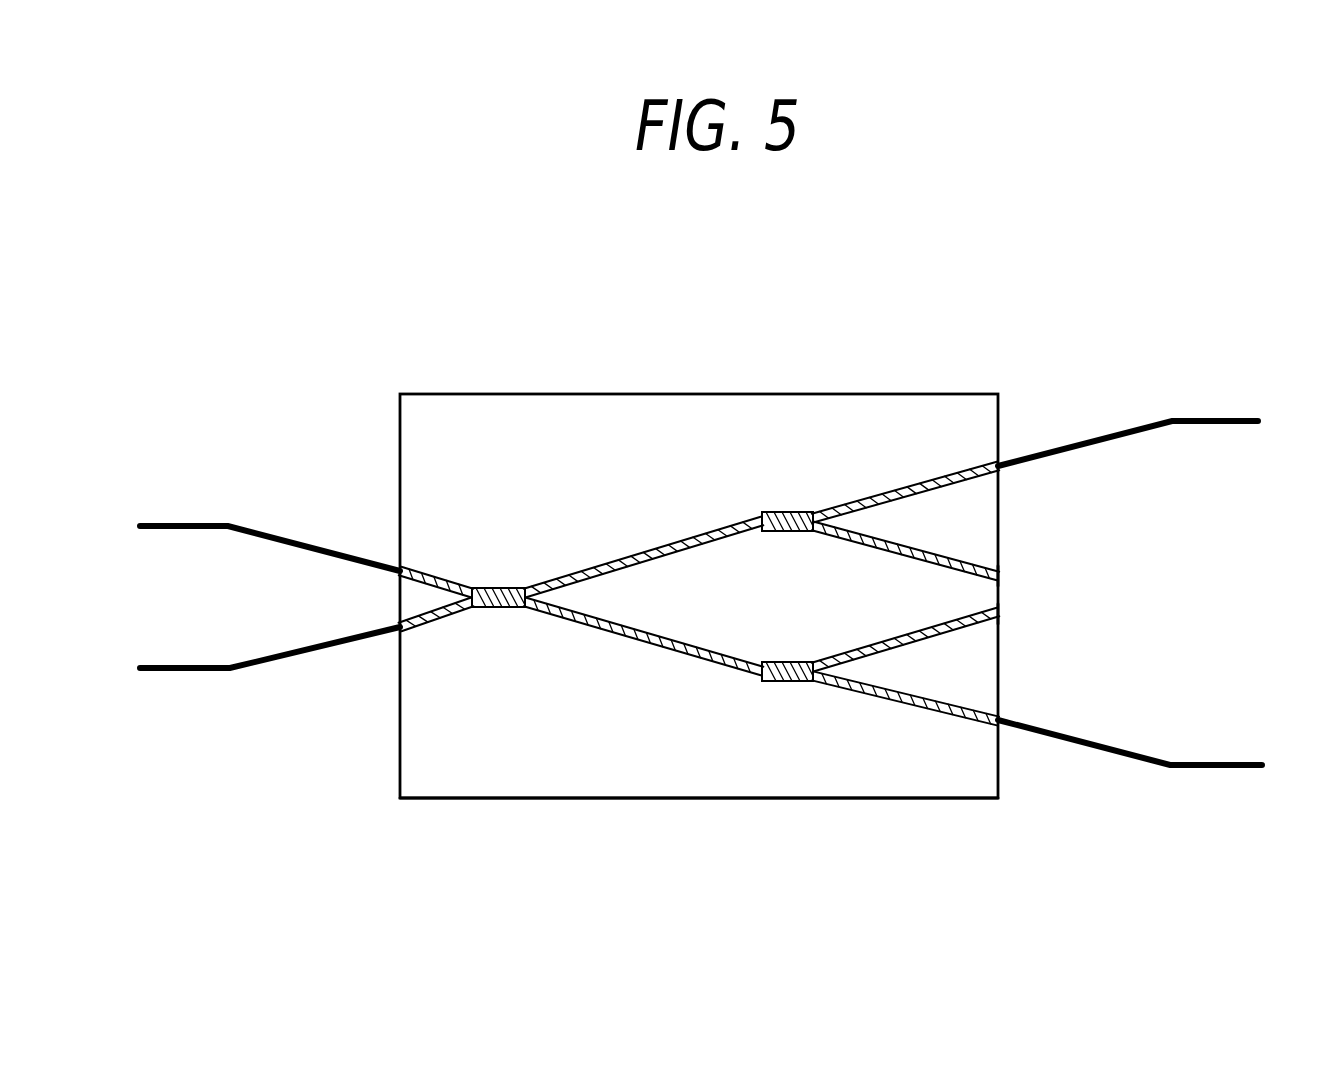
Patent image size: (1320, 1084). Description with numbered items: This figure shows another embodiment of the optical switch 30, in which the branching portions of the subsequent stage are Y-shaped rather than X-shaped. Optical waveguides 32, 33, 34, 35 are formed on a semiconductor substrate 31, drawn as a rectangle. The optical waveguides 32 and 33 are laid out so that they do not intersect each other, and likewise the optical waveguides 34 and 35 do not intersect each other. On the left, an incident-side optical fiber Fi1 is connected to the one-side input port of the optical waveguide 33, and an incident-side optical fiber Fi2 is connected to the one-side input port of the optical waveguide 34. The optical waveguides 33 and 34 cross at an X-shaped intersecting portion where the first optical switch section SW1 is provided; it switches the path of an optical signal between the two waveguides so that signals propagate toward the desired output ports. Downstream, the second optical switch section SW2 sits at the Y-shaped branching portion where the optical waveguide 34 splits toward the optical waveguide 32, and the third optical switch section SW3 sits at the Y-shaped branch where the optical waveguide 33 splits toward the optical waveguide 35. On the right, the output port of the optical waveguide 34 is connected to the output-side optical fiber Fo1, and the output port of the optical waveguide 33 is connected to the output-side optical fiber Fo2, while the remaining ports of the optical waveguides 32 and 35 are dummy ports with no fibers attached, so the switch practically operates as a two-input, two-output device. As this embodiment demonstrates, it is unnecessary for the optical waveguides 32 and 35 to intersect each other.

The optical switch 30 is at (448, 798).
The semiconductor substrate 31 is at (550, 775).
The optical waveguide 32 is at (905, 545).
The optical waveguide 33 is at (662, 645).
The optical waveguide 34 is at (648, 560).
The optical waveguide 35 is at (918, 645).
The first optical switch section SW1 is at (488, 588).
The second optical switch section SW2 is at (772, 512).
The third optical switch section SW3 is at (790, 681).
The incident-side optical fiber Fi1 is at (192, 526).
The incident-side optical fiber Fi2 is at (185, 670).
The output-side optical fiber Fo1 is at (1220, 421).
The output-side optical fiber Fo2 is at (1222, 766).